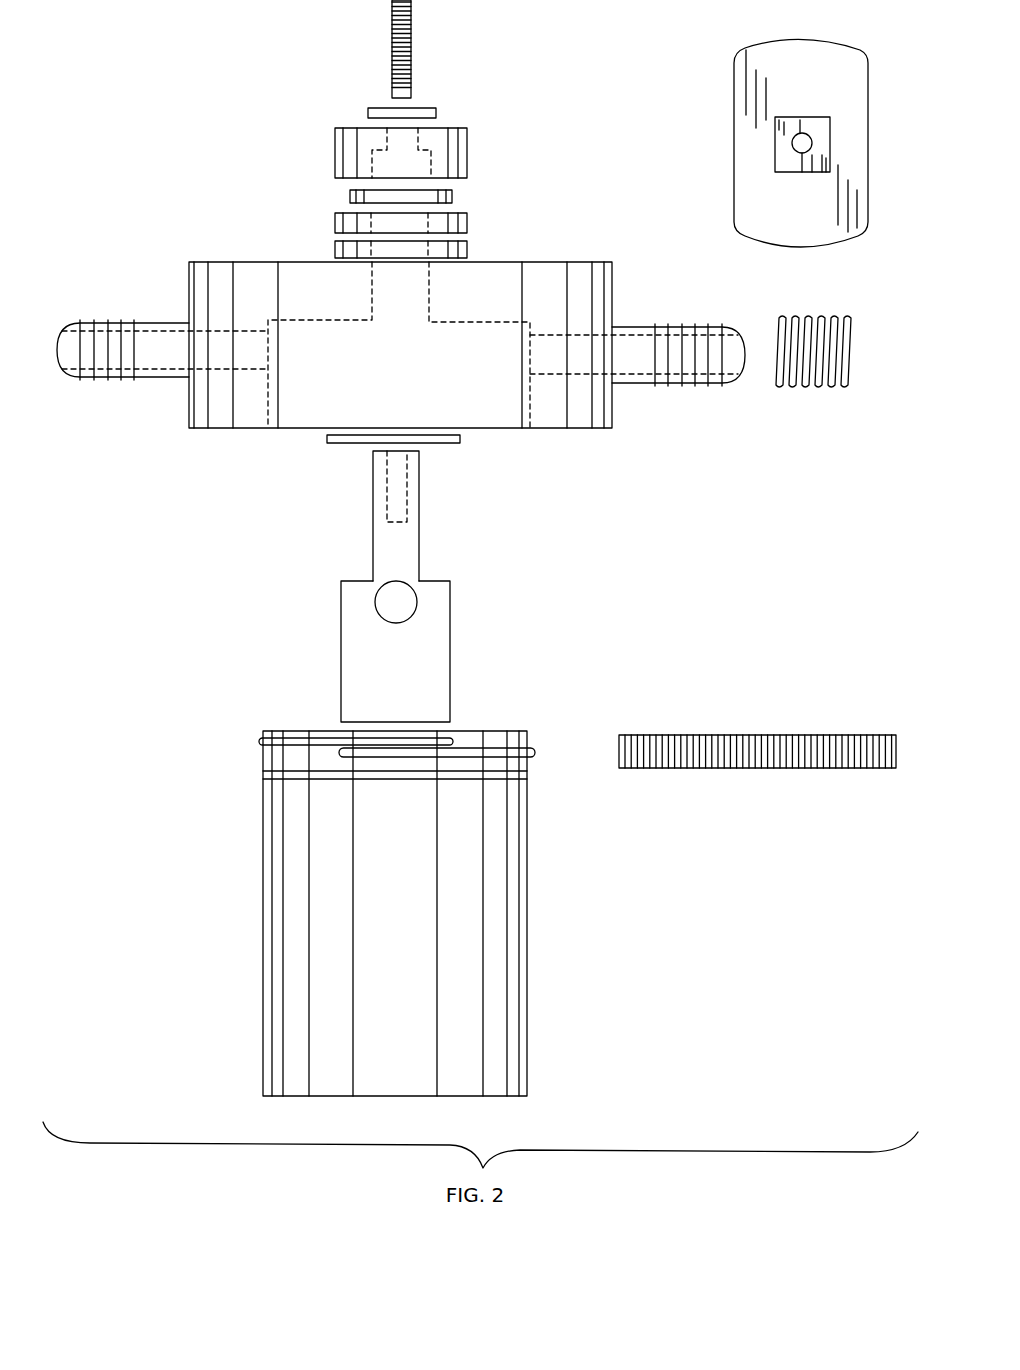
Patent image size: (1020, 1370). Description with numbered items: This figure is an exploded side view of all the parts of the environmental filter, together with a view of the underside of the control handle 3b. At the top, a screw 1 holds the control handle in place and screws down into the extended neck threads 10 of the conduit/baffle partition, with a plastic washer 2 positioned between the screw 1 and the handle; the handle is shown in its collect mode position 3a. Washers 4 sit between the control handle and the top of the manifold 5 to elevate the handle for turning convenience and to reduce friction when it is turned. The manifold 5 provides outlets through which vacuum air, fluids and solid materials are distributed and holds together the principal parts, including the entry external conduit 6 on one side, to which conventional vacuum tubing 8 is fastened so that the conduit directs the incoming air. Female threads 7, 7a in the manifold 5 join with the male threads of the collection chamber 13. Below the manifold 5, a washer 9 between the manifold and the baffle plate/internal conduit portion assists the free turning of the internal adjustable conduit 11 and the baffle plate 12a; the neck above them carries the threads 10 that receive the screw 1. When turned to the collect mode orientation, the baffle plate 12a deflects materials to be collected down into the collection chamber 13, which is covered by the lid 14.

In FIG. 2, the screw 1 is at (412, 42).
In FIG. 2, the plastic washer 2 is at (436, 113).
In FIG. 2, the control handle in collect mode 3a is at (467, 158).
In FIG. 3B, the underside of control handle 3b is at (734, 145).
In FIG. 2, the washers 4 is at (452, 196).
In FIG. 2, the manifold 5 is at (612, 295).
In FIG. 2, the entry external conduit 6 is at (697, 383).
In FIG. 2, the female threads 7 is at (532, 402).
In FIG. 2, the female threads 7a is at (268, 408).
In FIG. 2, the vacuum tubing 8 is at (813, 371).
In FIG. 2, the washer 9 is at (460, 440).
In FIG. 2, the extended neck threads 10 is at (400, 497).
In FIG. 2, the internal adjustable conduit 11 is at (397, 603).
In FIG. 2, the baffle plate 12a is at (450, 680).
In FIG. 2, the collection chamber 13 is at (527, 890).
In FIG. 2, the lid 14 is at (745, 735).